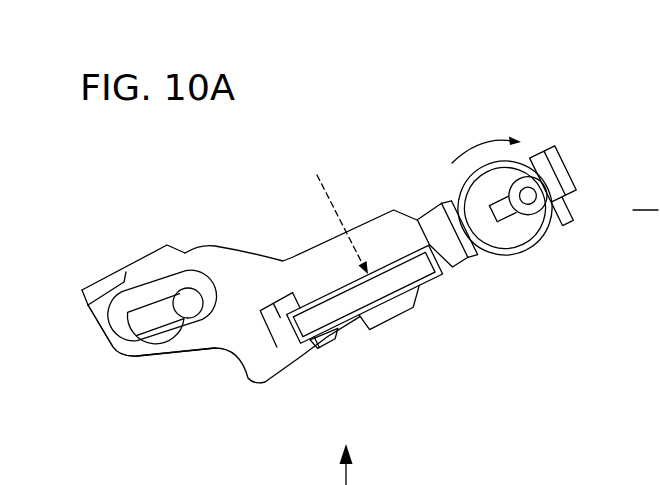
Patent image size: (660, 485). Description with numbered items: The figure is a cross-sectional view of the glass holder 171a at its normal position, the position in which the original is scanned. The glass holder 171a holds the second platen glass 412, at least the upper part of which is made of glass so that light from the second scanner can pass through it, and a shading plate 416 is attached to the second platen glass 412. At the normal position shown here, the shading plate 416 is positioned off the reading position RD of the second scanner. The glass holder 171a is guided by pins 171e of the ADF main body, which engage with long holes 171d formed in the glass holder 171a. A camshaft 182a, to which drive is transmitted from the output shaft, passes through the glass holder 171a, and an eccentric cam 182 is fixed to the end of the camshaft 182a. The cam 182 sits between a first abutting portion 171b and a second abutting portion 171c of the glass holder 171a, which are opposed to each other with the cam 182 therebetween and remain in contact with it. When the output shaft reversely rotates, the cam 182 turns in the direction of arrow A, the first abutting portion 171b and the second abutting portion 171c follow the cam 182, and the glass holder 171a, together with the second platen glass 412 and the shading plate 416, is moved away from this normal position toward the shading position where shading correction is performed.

The glass holder 171a is at (142, 285).
The first abutting portion 171b is at (431, 210).
The second abutting portion 171c is at (553, 182).
The long hole 171d is at (123, 353).
The pin 171e is at (188, 308).
The cam 182 is at (510, 240).
The camshaft 182a is at (530, 198).
The second platen glass 412 is at (388, 304).
The shading plate 416 is at (330, 344).
The reading position RD is at (333, 209).
The arrow A (direction of cam rotation) A is at (486, 135).